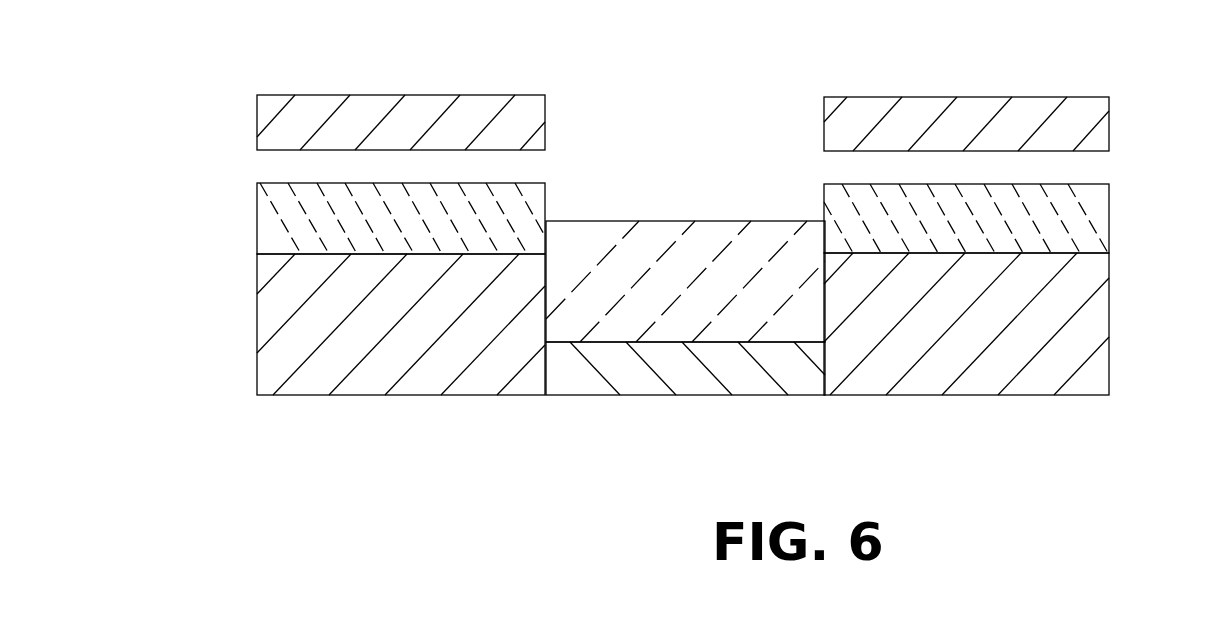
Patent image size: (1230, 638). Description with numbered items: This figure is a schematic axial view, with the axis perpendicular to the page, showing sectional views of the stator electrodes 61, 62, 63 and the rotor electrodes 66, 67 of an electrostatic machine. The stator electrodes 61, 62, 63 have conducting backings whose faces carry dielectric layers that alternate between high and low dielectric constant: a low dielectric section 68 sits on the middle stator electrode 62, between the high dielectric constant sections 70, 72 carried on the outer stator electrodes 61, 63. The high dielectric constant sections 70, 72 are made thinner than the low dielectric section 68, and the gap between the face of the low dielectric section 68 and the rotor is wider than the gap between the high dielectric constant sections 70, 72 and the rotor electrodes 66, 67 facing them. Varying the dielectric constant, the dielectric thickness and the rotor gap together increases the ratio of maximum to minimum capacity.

The stator electrode 61 is at (386, 396).
The stator electrode 62 is at (703, 396).
The stator electrode 63 is at (983, 396).
The rotor electrode 66 is at (413, 95).
The rotor electrode 67 is at (975, 97).
The low dielectric section 68 is at (718, 221).
The high dielectric constant section 70 is at (257, 233).
The high dielectric constant section 72 is at (1110, 217).